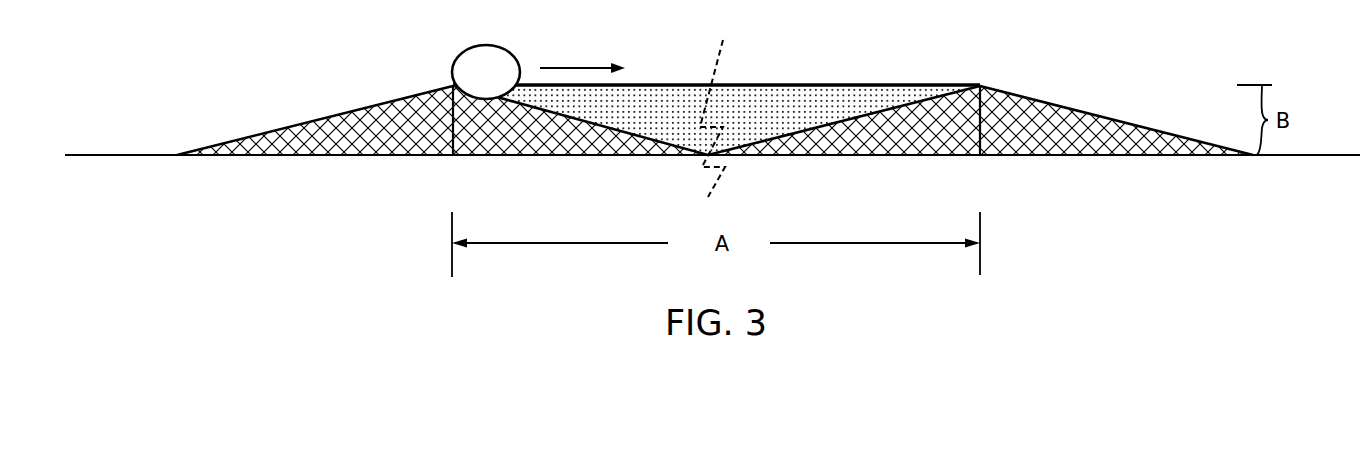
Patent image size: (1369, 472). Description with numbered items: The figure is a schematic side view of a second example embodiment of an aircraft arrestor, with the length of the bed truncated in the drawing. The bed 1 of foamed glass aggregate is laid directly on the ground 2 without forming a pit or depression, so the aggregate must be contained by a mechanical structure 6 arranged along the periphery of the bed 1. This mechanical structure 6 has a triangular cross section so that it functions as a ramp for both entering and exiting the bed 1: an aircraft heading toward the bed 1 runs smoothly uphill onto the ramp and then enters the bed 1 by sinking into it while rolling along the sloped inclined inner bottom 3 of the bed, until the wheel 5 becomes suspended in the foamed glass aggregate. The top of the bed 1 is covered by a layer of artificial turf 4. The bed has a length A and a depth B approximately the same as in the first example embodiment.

The bed 1 is at (680, 125).
The ground 2 is at (958, 155).
The sloped inclined inner bottom 3 is at (908, 100).
The layer of artificial turf 4 is at (815, 85).
The wheel 5 is at (477, 84).
The mechanical structure 6 is at (375, 118).